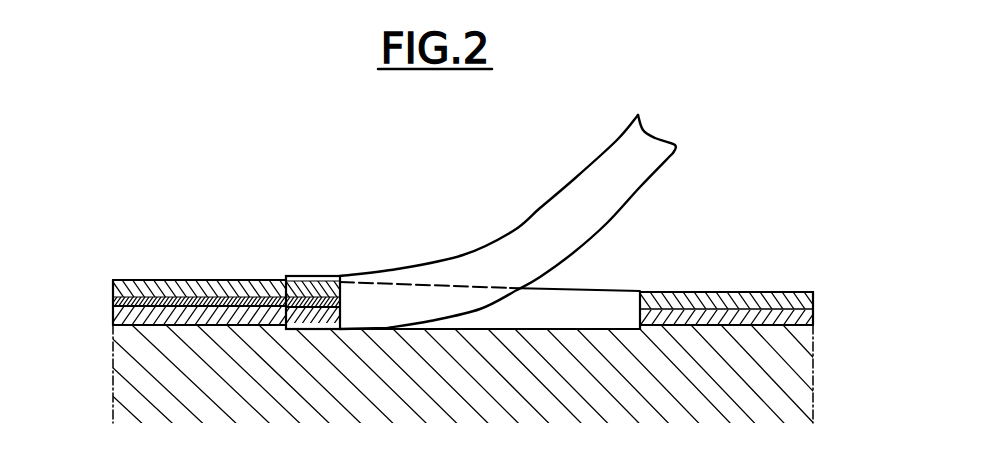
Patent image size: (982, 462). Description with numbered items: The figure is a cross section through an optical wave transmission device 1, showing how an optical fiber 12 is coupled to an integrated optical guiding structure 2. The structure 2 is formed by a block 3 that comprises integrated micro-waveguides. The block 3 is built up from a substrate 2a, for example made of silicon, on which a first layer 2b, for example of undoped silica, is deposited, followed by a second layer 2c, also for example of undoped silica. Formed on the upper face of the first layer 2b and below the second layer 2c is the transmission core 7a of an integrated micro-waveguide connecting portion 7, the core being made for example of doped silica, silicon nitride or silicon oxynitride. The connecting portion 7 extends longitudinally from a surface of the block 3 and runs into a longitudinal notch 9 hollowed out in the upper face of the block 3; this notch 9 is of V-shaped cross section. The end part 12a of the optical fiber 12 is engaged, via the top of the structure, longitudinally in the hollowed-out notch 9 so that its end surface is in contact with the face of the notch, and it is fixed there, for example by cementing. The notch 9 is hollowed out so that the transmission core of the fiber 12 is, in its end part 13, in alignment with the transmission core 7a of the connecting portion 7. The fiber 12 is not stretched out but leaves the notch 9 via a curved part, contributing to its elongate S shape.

The optical wave transmission device 1 is at (508, 216).
The integrated optical guiding structure 2 is at (451, 296).
The substrate 2a is at (143, 368).
The first layer 2b is at (135, 318).
The second layer 2c is at (468, 267).
The block 3 is at (819, 397).
The integrated micro-waveguide connecting portion 7 is at (177, 289).
The transmission core 7a is at (235, 291).
The longitudinal notch 9 is at (613, 311).
The optical fiber 12 is at (602, 190).
The end part of the optical fiber 12a is at (312, 279).
The end part of the fiber transmission core 13 is at (343, 317).